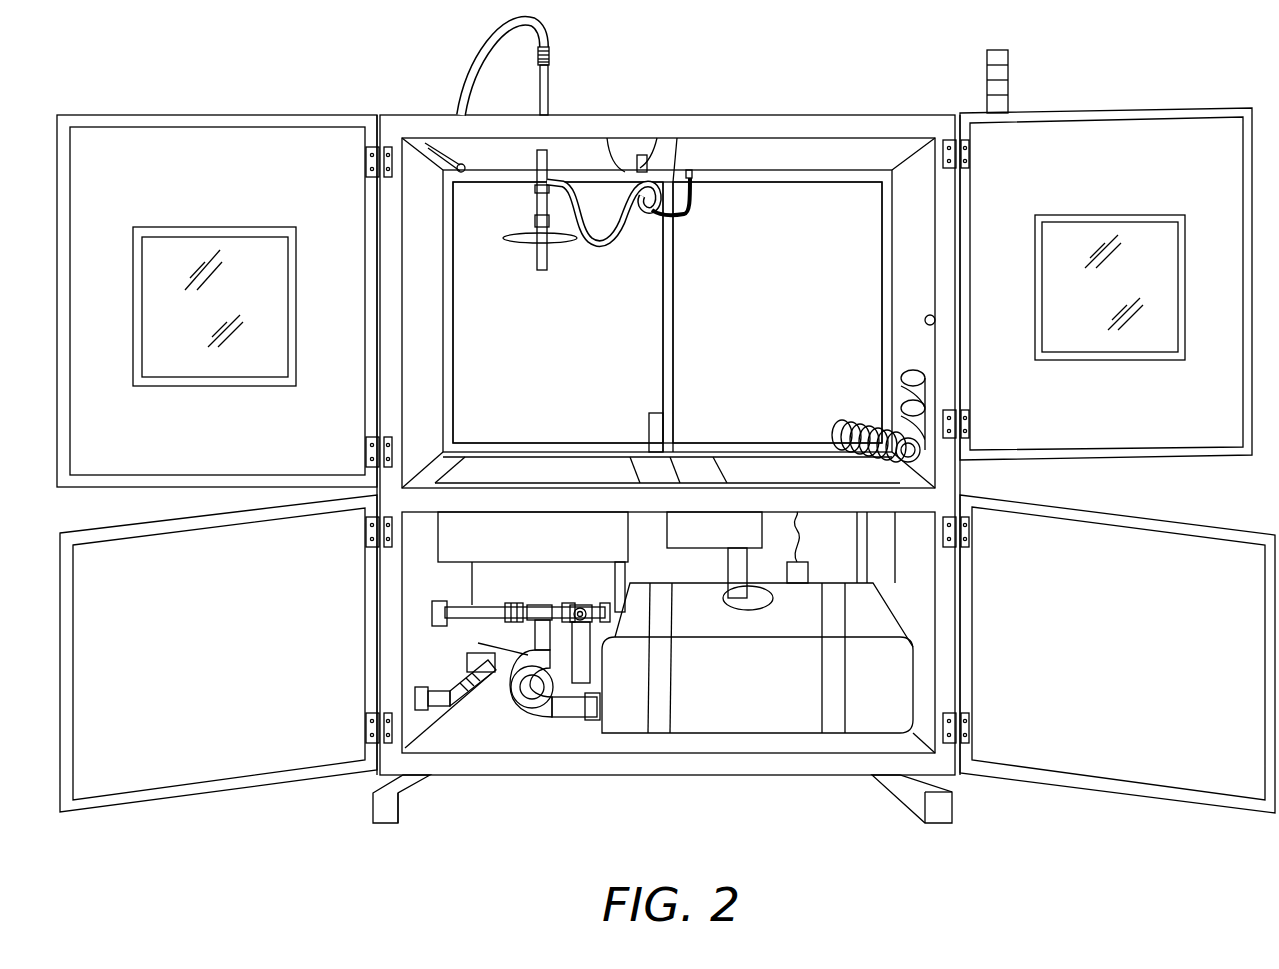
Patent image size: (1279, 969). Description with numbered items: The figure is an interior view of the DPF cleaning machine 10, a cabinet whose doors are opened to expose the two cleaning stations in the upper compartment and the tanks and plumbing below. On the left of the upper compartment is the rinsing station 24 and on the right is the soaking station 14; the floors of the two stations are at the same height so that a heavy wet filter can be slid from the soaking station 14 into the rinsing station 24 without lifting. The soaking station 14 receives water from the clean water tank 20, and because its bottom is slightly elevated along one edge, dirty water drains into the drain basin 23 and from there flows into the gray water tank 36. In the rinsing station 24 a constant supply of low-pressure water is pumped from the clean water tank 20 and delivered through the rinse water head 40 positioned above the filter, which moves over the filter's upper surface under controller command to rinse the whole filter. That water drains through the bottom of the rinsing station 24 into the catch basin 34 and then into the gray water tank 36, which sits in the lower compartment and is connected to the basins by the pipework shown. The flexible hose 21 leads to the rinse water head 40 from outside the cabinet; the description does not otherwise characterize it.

The DPF cleaning machine 10 is at (528, 500).
The soaking station 14 is at (768, 368).
The clean water tank 20 is at (223, 285).
The flexible hose 21 is at (470, 62).
The drain basin 23 is at (708, 533).
The rinsing station 24 is at (546, 367).
The catch basin 34 is at (562, 542).
The gray water tank 36 is at (780, 667).
The rinse water head 40 is at (552, 93).